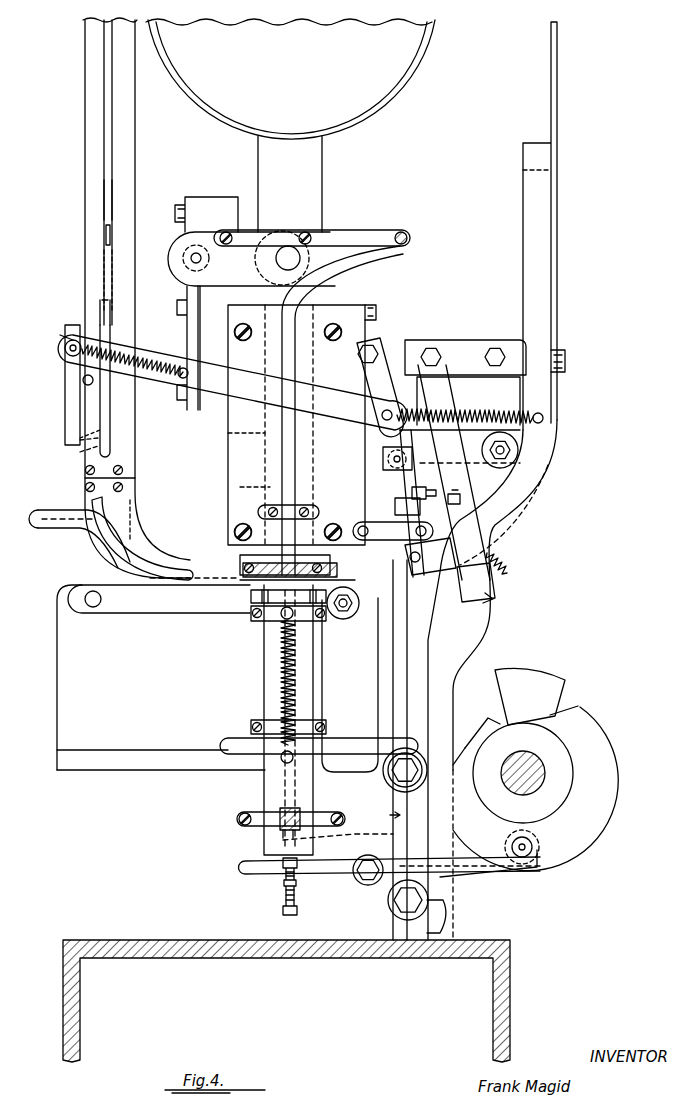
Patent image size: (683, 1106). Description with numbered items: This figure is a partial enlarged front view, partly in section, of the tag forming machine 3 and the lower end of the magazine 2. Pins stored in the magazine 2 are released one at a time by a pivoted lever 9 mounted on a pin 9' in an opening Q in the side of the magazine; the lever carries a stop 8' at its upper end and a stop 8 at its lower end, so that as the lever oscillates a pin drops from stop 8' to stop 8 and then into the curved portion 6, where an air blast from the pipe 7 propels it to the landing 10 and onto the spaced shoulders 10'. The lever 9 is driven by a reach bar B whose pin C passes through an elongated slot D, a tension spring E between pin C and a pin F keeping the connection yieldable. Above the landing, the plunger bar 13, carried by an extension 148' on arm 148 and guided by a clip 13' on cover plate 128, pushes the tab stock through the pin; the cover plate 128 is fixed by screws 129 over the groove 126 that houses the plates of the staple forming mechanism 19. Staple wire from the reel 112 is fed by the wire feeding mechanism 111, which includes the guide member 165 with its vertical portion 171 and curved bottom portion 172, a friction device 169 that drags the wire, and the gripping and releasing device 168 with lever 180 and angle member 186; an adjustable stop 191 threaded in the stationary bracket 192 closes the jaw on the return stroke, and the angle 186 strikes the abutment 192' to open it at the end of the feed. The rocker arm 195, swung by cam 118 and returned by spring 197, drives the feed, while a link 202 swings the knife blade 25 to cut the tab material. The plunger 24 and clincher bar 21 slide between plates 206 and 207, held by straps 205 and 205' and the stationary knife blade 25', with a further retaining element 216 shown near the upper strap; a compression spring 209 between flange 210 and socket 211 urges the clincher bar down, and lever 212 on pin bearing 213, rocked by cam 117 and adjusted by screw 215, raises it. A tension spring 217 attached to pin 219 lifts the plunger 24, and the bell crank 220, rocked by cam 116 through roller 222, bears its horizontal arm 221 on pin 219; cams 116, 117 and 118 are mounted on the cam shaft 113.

The magazine 2 is at (85, 208).
The reel 112 is at (308, 97).
The arm 148 is at (251, 258).
The extension 148' is at (312, 391).
The screws 129 is at (236, 330).
The groove 126 is at (245, 433).
The cover plate 128 is at (248, 449).
The plunger bar 13 is at (250, 425).
The staple forming mechanism 19 is at (270, 487).
The reach bar B is at (232, 382).
The elongated slot D is at (64, 348).
The pin C is at (68, 355).
The tension spring E is at (158, 380).
The pin F is at (182, 368).
The pivoted lever 9 is at (63, 385).
The pin 9' is at (62, 400).
The stop 8 is at (81, 401).
The stop 8' is at (80, 312).
The opening Q is at (96, 445).
The pipe 7 is at (50, 530).
The curved portion 6 is at (152, 545).
The landing place 10 is at (260, 557).
The spaced shoulders 10' is at (279, 608).
The knife blade 25 is at (297, 564).
The stationary knife blade 25' is at (288, 599).
The clip 13' is at (297, 491).
The stationary support bracket 192 is at (457, 405).
The spring 197 is at (503, 413).
The staple wire feeding mechanism 111 is at (382, 458).
The abutment 192' is at (427, 483).
The angle member 186 is at (395, 508).
The lever 180 is at (415, 487).
The adjustable stop 191 is at (440, 500).
The link 202 is at (393, 532).
The wire gripping and releasing device 168 is at (412, 556).
The guide member 165 is at (524, 226).
The vertical portion 171 is at (524, 146).
The tag forming machine 3 is at (492, 680).
The curved bottom portion 172 is at (498, 525).
The friction device 169 is at (492, 600).
The plate 207 is at (161, 677).
The plunger bar 24 is at (288, 720).
The tension spring 217 is at (296, 685).
The clamp 216 is at (280, 620).
The guide and retaining strap 205 is at (309, 718).
The plate 206 is at (372, 660).
The rocker arm 195 is at (420, 750).
The horizontal arm 221 is at (365, 752).
The pin 219 is at (282, 760).
The roller 222 is at (384, 780).
The clincher bar 21 is at (302, 812).
The guide and retaining strap 205' is at (227, 834).
The socket 211 is at (262, 812).
The bell crank 220 is at (380, 814).
The compression spring 209 is at (338, 831).
The flange 210 is at (312, 856).
The pin bearing 213 is at (356, 882).
The lever 212 is at (388, 895).
The adjustment screw 215 is at (283, 910).
The cam 116 is at (610, 810).
The cam 118 is at (482, 730).
The cam shaft 113 is at (540, 770).
The cam 117 is at (565, 686).